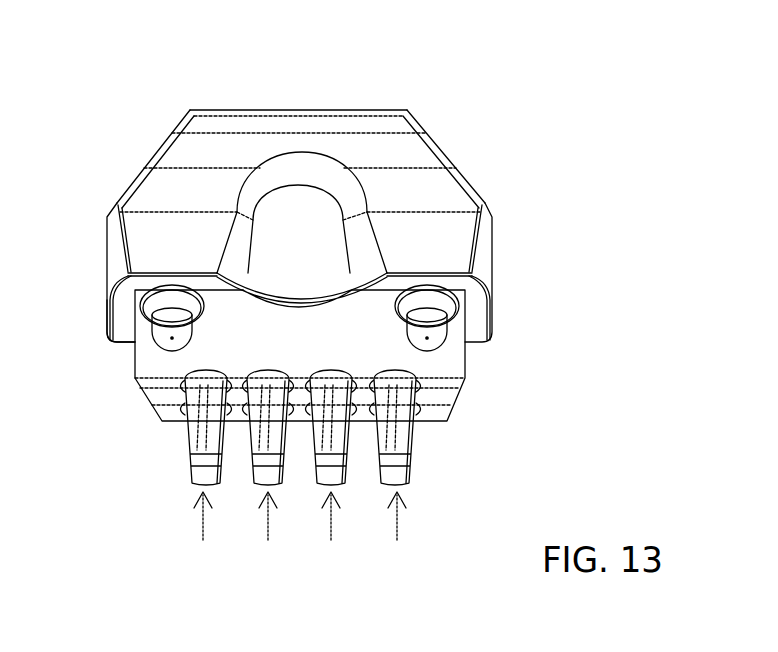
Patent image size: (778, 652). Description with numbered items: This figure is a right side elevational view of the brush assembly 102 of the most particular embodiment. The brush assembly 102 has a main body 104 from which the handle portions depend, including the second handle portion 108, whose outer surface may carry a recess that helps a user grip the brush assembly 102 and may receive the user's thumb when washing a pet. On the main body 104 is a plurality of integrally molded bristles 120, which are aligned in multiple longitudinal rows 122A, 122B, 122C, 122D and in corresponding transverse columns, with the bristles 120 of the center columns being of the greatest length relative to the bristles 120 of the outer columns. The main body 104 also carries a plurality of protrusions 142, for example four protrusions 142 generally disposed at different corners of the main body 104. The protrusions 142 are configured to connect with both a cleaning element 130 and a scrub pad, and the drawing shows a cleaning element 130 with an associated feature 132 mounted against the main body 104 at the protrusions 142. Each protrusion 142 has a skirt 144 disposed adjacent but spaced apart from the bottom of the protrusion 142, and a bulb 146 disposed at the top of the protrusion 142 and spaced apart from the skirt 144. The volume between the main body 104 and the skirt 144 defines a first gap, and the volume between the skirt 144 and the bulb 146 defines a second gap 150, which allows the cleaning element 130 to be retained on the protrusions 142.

The brush assembly 102 is at (313, 310).
The main body 104 is at (147, 203).
The second handle portion 108 is at (452, 175).
The bristles 120 is at (397, 425).
The first longitudinal row 122A is at (199, 530).
The second longitudinal row 122B is at (273, 530).
The third longitudinal row 122C is at (341, 530).
The fourth longitudinal row 122D is at (404, 530).
The cleaning element 130 is at (364, 368).
The plate ribs 132 is at (443, 418).
The protrusions 142 is at (126, 350).
The skirt 144 is at (481, 331).
The bulb 146 is at (448, 340).
The second gap 150 is at (129, 328).